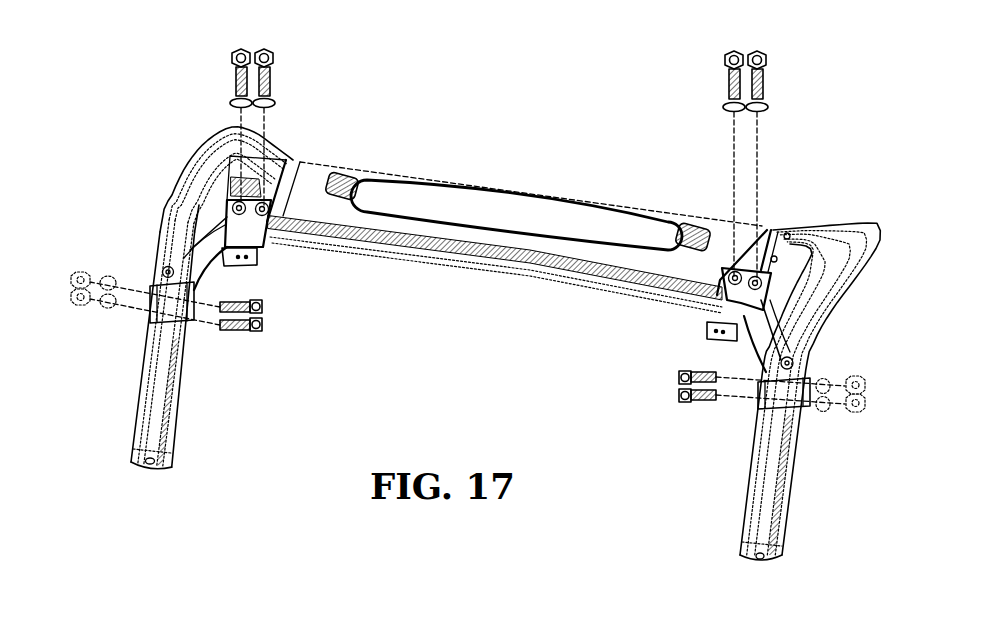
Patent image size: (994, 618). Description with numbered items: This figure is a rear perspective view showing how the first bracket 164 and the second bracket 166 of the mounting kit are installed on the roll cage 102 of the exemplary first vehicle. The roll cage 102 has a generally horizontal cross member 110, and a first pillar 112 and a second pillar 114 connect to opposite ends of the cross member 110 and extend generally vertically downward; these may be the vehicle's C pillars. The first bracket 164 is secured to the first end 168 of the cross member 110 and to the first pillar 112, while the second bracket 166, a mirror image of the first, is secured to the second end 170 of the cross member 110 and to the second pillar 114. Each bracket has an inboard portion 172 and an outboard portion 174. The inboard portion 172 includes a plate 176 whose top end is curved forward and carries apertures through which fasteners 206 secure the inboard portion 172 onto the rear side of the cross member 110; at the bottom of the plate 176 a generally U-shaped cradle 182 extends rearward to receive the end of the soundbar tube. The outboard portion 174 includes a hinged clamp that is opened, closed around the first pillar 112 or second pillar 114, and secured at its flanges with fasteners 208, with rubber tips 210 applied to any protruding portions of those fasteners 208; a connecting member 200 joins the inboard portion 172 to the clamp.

The roll cage 102 is at (190, 115).
The cross member 110 is at (313, 186).
The first pillar 112 is at (754, 508).
The second pillar 114 is at (154, 433).
The first bracket 164 is at (686, 340).
The second bracket 166 is at (265, 275).
The first end 168 is at (771, 230).
The second end 170 is at (293, 161).
The inboard portion 172 is at (216, 222).
The outboard portion 174 is at (137, 320).
The plate 176 is at (241, 227).
The cradle 182 is at (250, 273).
The connecting member 200 is at (207, 266).
The fasteners 206 is at (275, 72).
The fasteners 208 is at (233, 332).
The rubber tips 210 is at (82, 272).